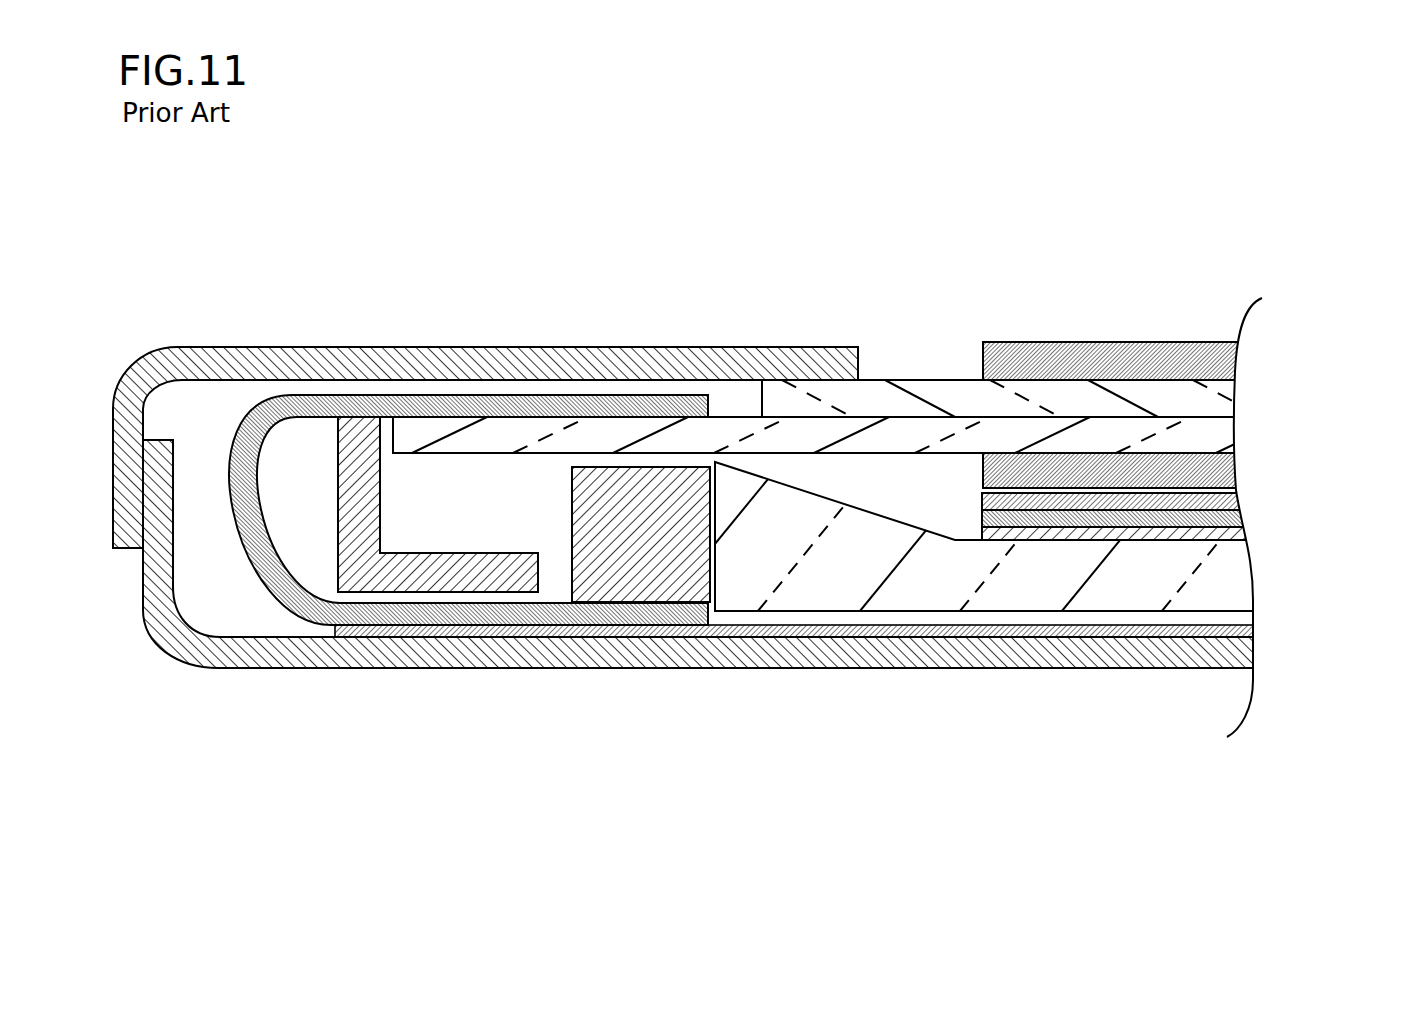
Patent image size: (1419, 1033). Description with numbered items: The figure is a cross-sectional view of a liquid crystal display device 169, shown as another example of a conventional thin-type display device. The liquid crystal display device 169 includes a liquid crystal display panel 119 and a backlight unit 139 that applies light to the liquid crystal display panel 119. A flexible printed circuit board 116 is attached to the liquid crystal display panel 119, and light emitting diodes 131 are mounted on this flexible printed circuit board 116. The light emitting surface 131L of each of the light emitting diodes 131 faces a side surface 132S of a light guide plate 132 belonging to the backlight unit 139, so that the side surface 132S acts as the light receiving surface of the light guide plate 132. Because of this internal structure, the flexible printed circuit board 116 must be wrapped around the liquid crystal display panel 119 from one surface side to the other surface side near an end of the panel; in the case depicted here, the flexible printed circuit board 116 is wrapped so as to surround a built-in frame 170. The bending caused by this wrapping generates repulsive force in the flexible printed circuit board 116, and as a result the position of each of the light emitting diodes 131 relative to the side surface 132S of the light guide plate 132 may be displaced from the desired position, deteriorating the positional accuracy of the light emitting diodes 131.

The flexible printed circuit board 116 is at (232, 468).
The built-in frame 170 is at (438, 504).
The light emitting diode 131 is at (642, 536).
The light emitting surface 131L is at (712, 577).
The light guide plate 132 is at (1241, 596).
The side surface 132S is at (737, 572).
The liquid crystal display panel 119 is at (1297, 335).
The backlight unit 139 is at (1297, 493).
The liquid crystal display device 169 is at (902, 486).